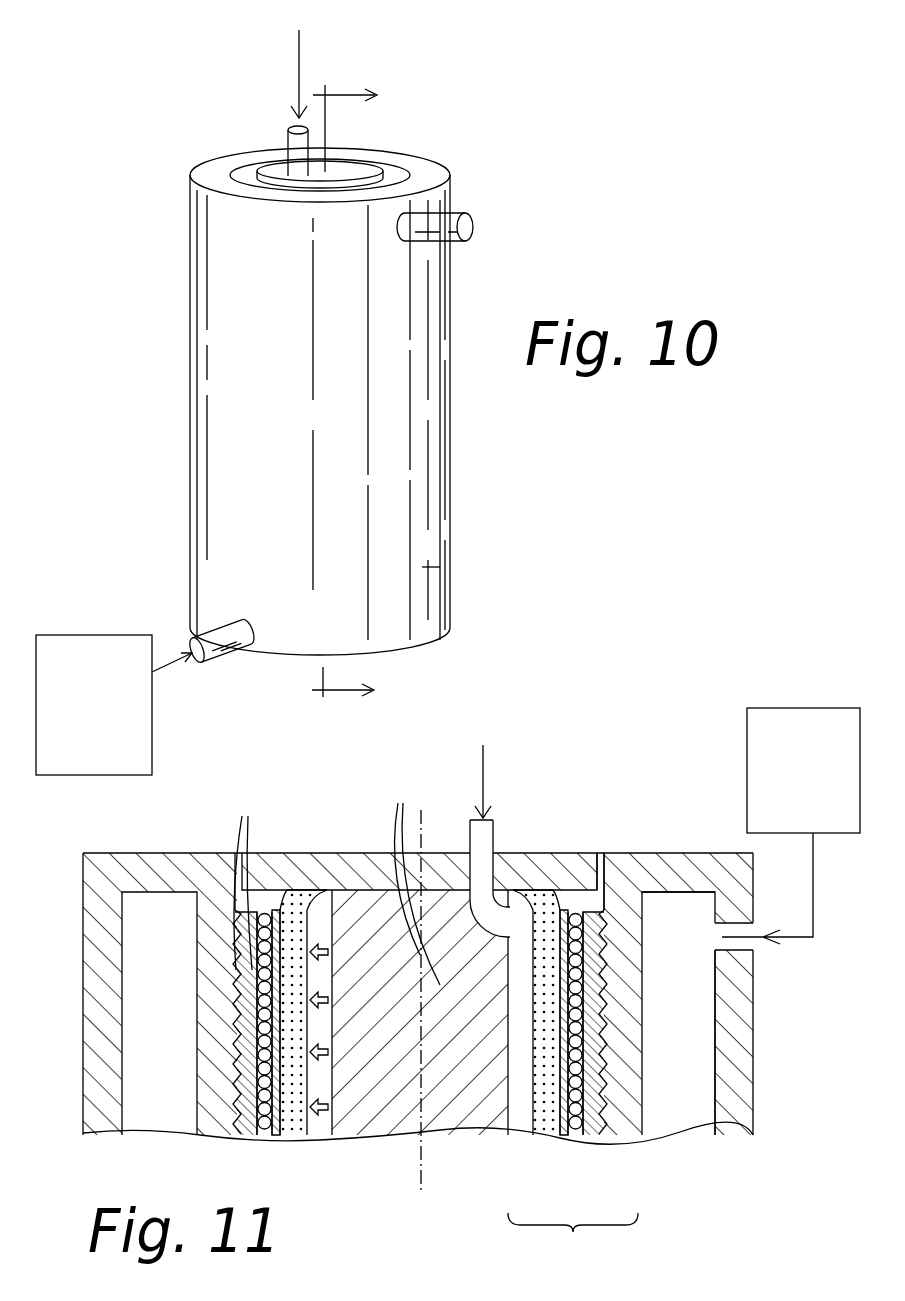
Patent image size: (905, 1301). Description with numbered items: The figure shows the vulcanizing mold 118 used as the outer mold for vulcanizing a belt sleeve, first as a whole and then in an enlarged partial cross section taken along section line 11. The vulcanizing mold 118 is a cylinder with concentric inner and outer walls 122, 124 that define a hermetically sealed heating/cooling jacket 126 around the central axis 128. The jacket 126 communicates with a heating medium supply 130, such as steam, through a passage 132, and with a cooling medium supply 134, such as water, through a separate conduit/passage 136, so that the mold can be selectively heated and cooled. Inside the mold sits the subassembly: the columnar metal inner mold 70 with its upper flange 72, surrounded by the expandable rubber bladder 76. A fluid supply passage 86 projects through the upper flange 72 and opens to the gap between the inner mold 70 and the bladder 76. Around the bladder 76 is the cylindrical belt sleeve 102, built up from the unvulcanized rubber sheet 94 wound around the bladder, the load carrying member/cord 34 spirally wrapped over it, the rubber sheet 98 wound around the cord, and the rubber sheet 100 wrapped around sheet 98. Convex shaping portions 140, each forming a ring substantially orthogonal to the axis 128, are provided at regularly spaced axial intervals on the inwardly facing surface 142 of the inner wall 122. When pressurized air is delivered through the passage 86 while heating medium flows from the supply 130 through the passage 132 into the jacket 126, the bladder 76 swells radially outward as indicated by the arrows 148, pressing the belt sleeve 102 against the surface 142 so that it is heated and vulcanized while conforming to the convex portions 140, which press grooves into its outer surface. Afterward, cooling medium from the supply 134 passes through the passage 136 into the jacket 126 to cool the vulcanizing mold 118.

In FIG. 10, the section line 11- 11 is at (361, 396).
In FIG. 11, the load carrying member/cord 34 is at (580, 1142).
In FIG. 10, the metal/inner mold 70 is at (368, 158).
In FIG. 11, the metal/inner mold 70 is at (390, 1103).
In FIG. 11, the upper flange 72 is at (373, 860).
In FIG. 11, the bladder 76 is at (291, 1118).
In FIG. 10, the fluid supply passage 86 is at (294, 135).
In FIG. 11, the fluid supply passage 86 is at (484, 838).
In FIG. 11, the unvulcanized rubber sheet 94 is at (563, 1142).
In FIG. 11, the unvulcanized rubber sheet 98 is at (587, 1142).
In FIG. 11, the unvulcanized rubber sheet 100 is at (594, 1142).
In FIG. 11, the belt sleeve 102 is at (573, 1235).
In FIG. 10, the vulcanizing mold 118 is at (455, 440).
In FIG. 11, the vulcanizing mold 118 is at (682, 873).
In FIG. 11, the inner wall 122 is at (620, 960).
In FIG. 10, the outer wall 124 is at (440, 567).
In FIG. 11, the outer wall 124 is at (735, 1085).
In FIG. 11, the heating/cooling jacket 126 is at (680, 1010).
In FIG. 11, the central axis 128 is at (422, 1155).
In FIG. 11, the heating medium supply 130 is at (850, 827).
In FIG. 10, the passage 132 is at (472, 222).
In FIG. 11, the passage 132 is at (737, 930).
In FIG. 10, the cooling medium supply 134 is at (130, 768).
In FIG. 10, the conduit/passage 136 is at (213, 635).
In FIG. 11, the convex shaping portions 140 is at (331, 883).
In FIG. 11, the inwardly facing surface 142 is at (557, 1050).
In FIG. 11, the arrows 148 is at (342, 1062).